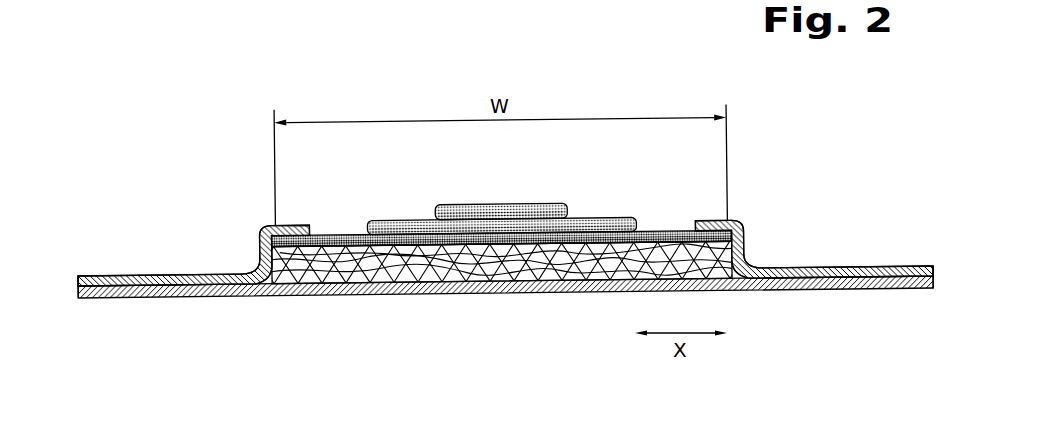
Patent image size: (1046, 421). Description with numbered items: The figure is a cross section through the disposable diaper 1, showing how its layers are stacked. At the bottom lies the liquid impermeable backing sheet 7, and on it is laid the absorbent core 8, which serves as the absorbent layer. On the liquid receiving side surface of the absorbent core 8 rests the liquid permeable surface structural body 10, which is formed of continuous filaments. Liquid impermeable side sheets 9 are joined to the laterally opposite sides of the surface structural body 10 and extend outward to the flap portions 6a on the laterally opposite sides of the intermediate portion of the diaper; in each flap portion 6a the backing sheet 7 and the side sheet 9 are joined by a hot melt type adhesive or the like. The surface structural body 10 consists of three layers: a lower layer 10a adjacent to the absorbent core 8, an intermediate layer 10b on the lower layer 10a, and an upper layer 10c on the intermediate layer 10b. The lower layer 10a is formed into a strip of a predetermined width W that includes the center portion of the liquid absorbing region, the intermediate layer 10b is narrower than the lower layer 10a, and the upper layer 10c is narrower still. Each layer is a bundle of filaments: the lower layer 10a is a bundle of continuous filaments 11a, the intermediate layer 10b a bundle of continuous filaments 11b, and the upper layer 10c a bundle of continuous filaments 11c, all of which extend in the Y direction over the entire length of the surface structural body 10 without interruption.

The disposable diaper 1 is at (750, 140).
The flap portions 6a is at (156, 303).
The liquid impermeable backing sheet 7 is at (558, 293).
The absorbent core 8 is at (367, 268).
The liquid impermeable side sheets 9 is at (266, 235).
The liquid permeable surface structural body 10 is at (600, 196).
The lower layer 10a is at (677, 231).
The intermediate layer 10b is at (398, 223).
The upper layer 10c is at (472, 204).
The continuous filaments 11a is at (334, 236).
The continuous filaments 11b is at (585, 219).
The continuous filaments 11c is at (532, 204).